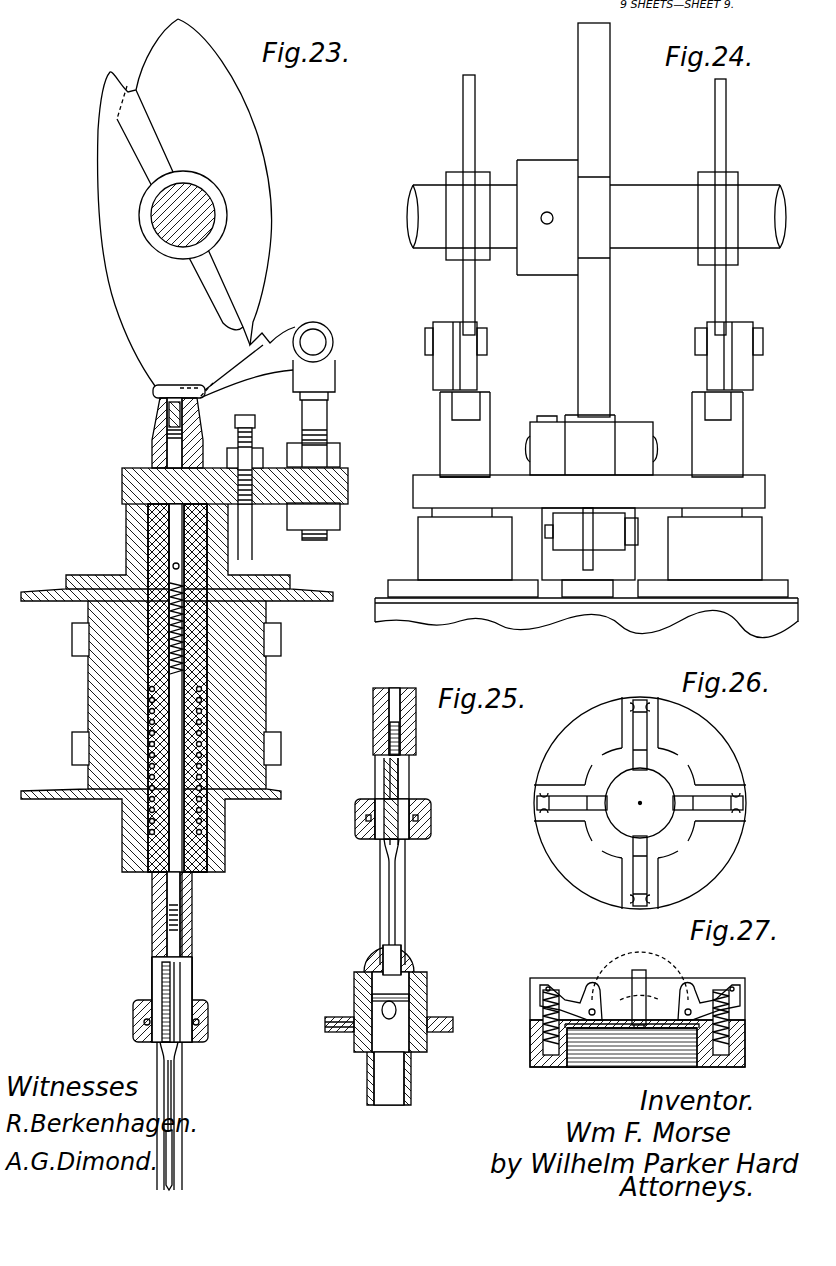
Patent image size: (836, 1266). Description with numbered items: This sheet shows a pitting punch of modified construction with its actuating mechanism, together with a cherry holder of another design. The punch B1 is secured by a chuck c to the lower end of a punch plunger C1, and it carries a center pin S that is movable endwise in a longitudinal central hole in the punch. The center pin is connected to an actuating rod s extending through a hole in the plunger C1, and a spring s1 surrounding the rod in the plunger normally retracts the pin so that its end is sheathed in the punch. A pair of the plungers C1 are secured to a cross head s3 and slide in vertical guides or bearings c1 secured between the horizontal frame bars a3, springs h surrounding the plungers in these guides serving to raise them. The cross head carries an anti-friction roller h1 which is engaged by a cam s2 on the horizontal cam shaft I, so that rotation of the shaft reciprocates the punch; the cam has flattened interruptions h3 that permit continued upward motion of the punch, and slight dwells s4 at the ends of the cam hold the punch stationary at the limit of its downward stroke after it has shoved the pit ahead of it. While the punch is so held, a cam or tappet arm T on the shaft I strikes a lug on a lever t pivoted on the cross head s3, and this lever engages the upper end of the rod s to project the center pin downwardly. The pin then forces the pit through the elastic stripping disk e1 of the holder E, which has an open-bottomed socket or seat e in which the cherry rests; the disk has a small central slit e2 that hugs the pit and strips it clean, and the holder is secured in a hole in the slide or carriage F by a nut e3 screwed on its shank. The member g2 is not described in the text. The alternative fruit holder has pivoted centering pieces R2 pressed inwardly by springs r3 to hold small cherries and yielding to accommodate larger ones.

In FIG. 23, the cam s2 is at (196, 202).
In FIG. 24, the cam s2 is at (604, 97).
In FIG. 23, the dwells s4 is at (172, 18).
In FIG. 23, the cam or tappet arm T is at (183, 215).
In FIG. 24, the cam or tappet arm T is at (467, 133).
In FIG. 23, the cam shaft I is at (197, 196).
In FIG. 24, the cam shaft I is at (596, 216).
In FIG. 23, the flattened interruptions h3 is at (97, 212).
In FIG. 23, the lever t is at (266, 357).
In FIG. 24, the lever t is at (478, 370).
In FIG. 23, the anti-friction roller h1 is at (153, 432).
In FIG. 24, the anti-friction roller h1 is at (592, 445).
In FIG. 23, the cross head s3 is at (125, 477).
In FIG. 24, the cross head s3 is at (589, 491).
In FIG. 23, the spring s1 is at (168, 590).
In FIG. 23, the horizontal beams or bars a3 is at (88, 693).
In FIG. 24, the horizontal beams or bars a3 is at (517, 612).
In FIG. 23, the punch plunger C1 is at (186, 711).
In FIG. 23, the vertical guides or bearings c1 is at (117, 782).
In FIG. 24, the vertical guides or bearings c1 is at (590, 544).
In FIG. 23, the springs h is at (147, 820).
In FIG. 23, the actuating rod s is at (172, 850).
In FIG. 23, the chucks c is at (207, 1013).
In FIG. 25, the chucks c is at (366, 818).
In FIG. 23, the pitting punch B1 is at (182, 1067).
In FIG. 25, the pitting punch B1 is at (406, 864).
In FIG. 23, the center pin S is at (171, 1102).
In FIG. 25, the center pin S is at (397, 686).
In FIG. 24, the bracket g2 is at (600, 590).
In FIG. 25, the holder E is at (372, 1038).
In FIG. 25, the slide or carriage F is at (338, 1040).
In FIG. 25, the open bottomed socket or seat e is at (414, 985).
In FIG. 25, the stripping disk or plate e1 is at (409, 998).
In FIG. 25, the central slit e2 is at (390, 1026).
In FIG. 25, the nut e3 is at (410, 1034).
In FIG. 26, the pivoted centering pieces R2 is at (640, 728).
In FIG. 27, the pivoted centering pieces R2 is at (582, 990).
In FIG. 27, the springs r3 is at (545, 1008).